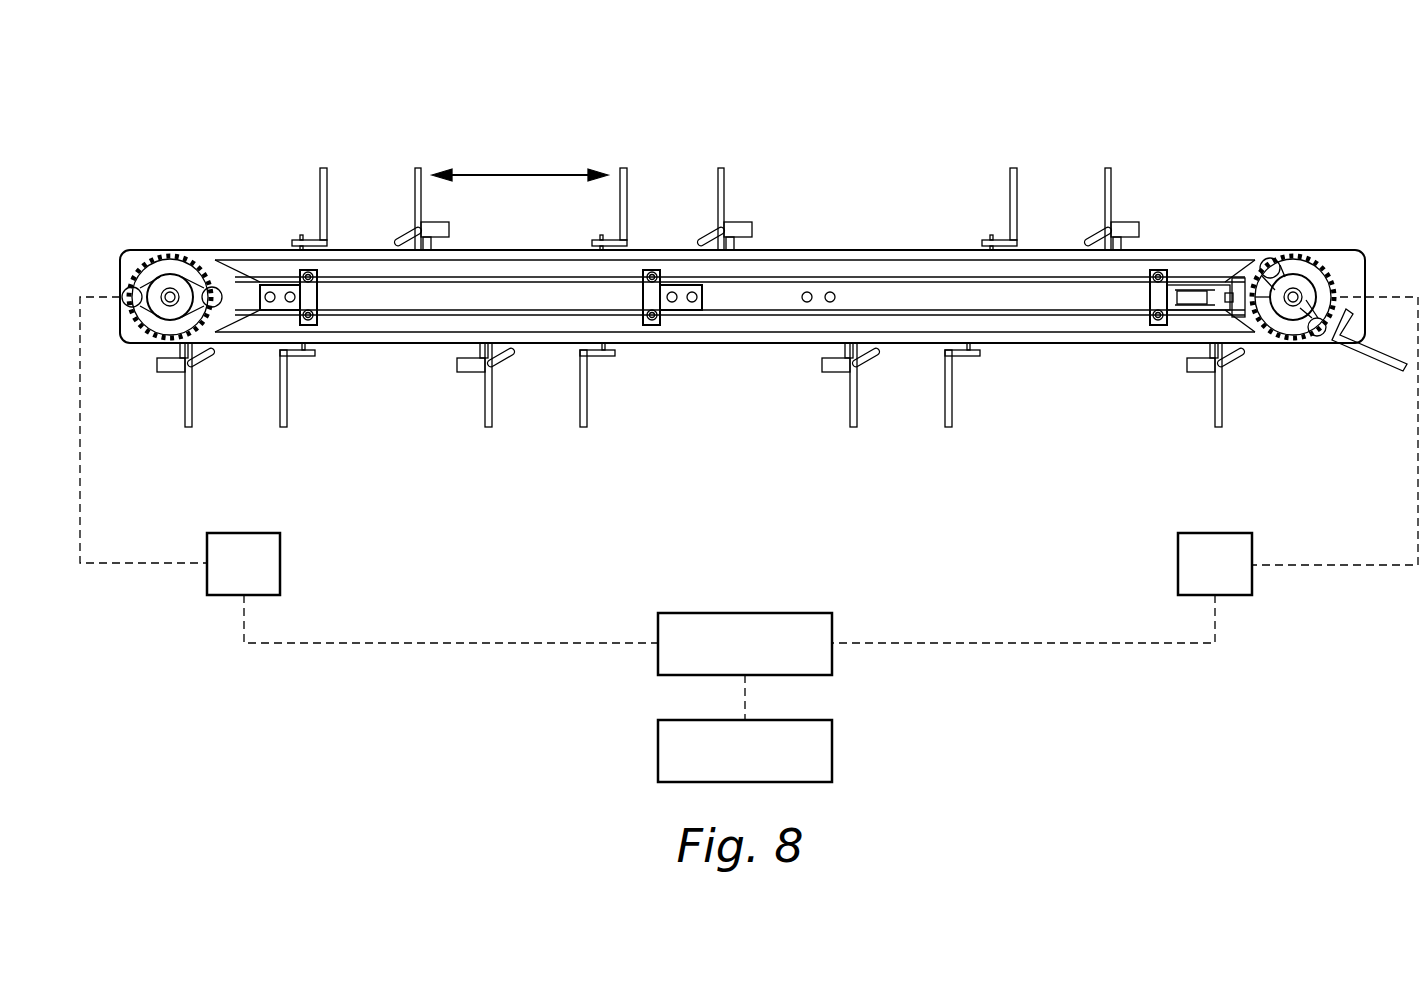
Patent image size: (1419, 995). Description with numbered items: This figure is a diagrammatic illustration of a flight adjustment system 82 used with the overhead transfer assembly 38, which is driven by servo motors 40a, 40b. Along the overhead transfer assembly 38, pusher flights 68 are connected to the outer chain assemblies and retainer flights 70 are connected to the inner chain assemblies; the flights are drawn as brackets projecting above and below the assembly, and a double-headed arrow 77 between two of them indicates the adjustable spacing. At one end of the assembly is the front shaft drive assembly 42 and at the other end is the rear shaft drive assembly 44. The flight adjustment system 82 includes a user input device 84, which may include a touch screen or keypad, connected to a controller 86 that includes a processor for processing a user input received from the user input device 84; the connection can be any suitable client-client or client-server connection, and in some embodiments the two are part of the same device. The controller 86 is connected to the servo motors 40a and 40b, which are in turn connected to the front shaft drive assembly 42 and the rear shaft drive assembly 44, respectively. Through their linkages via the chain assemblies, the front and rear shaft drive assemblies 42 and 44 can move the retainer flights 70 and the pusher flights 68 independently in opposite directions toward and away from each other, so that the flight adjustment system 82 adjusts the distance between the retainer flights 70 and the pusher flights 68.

The overhead transfer assembly 38 is at (1318, 108).
The front shaft drive assembly 42 is at (170, 295).
The rear shaft drive assembly 44 is at (1293, 295).
The pusher flights 68 is at (318, 203).
The retainer flights 70 is at (414, 192).
The adjustment distance 77 is at (517, 172).
The servo motor 40a is at (280, 565).
The servo motor 40b is at (1178, 565).
The flight adjustment system 82 is at (432, 756).
The user input device 84 is at (832, 750).
The controller 86 is at (767, 612).